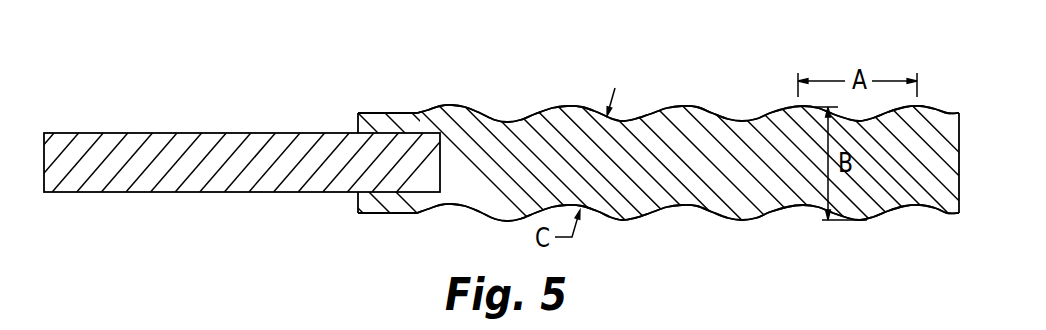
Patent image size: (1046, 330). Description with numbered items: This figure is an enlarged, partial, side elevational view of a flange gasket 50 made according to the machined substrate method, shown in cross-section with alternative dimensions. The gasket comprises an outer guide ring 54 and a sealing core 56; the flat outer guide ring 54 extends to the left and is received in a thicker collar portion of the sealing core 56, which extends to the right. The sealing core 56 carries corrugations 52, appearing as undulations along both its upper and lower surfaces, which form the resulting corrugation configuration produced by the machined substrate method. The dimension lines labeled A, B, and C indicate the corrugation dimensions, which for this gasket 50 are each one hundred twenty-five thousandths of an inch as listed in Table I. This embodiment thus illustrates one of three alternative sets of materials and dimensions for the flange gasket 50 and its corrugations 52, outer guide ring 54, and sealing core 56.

The flange gasket 50 is at (520, 144).
The corrugation 52 is at (682, 106).
The outer guide ring 54 is at (178, 165).
The sealing core 56 is at (723, 167).